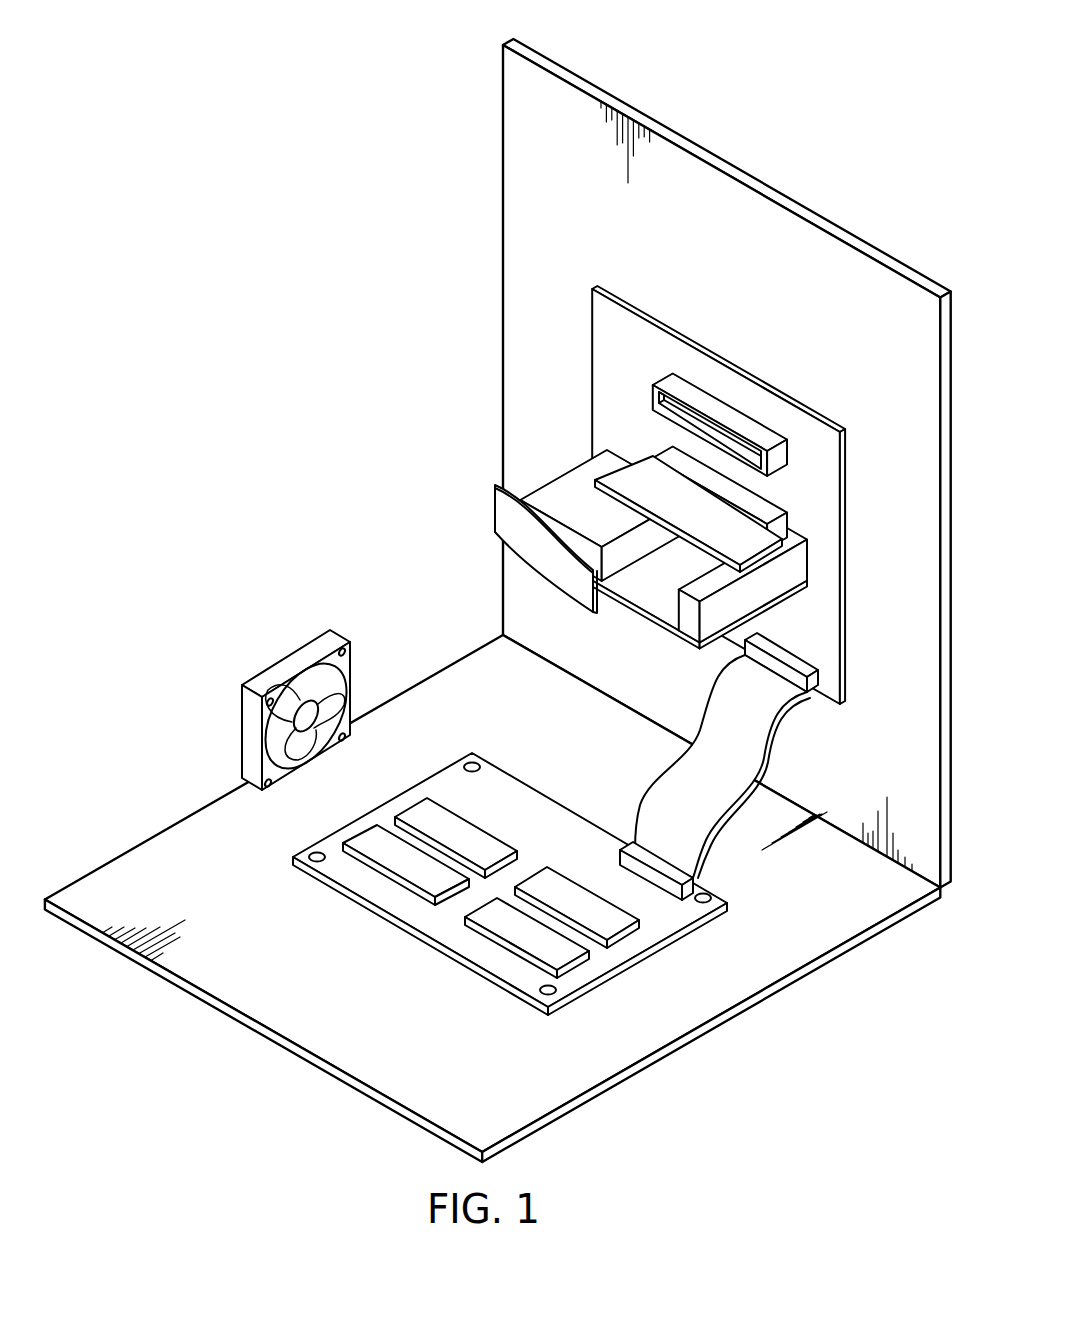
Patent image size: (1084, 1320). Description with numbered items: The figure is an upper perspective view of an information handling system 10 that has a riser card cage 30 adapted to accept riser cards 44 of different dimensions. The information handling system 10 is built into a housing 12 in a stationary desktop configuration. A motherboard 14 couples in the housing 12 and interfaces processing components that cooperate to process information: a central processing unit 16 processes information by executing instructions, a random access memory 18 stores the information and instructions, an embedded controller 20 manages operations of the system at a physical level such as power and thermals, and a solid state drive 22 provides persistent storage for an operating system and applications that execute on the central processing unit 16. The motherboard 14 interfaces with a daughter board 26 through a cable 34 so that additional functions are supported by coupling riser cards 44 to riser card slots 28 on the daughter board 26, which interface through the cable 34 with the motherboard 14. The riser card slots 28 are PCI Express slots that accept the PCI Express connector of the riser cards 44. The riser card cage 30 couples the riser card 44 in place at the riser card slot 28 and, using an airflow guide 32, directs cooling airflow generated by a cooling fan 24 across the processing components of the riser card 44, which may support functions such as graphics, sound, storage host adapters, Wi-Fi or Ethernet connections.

The information handling system 10 is at (498, 586).
The housing 12 is at (163, 831).
The motherboard 14 is at (415, 930).
The central processing unit (CPU) 16 is at (423, 812).
The random access memory (RAM) 18 is at (613, 922).
The embedded controller 20 is at (372, 843).
The solid state drive (SSD) 22 is at (563, 950).
The cooling fan 24 is at (268, 660).
The daughter board 26 is at (590, 447).
The riser card slots 28 is at (692, 466).
The riser card cage 30 is at (623, 603).
The airflow guide 32 is at (495, 490).
The cable 34 is at (677, 766).
The riser card 44 is at (633, 470).